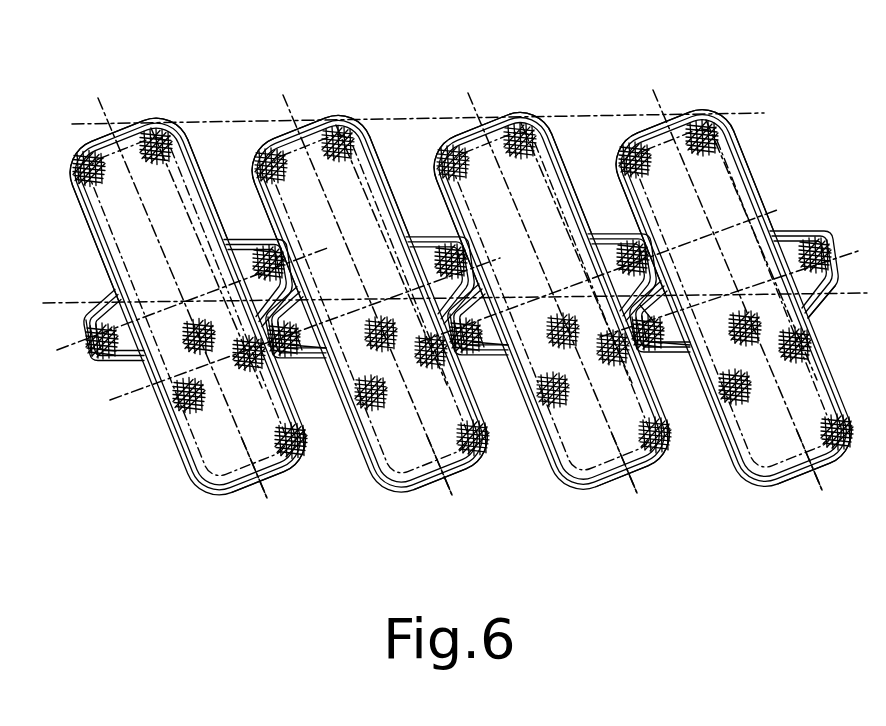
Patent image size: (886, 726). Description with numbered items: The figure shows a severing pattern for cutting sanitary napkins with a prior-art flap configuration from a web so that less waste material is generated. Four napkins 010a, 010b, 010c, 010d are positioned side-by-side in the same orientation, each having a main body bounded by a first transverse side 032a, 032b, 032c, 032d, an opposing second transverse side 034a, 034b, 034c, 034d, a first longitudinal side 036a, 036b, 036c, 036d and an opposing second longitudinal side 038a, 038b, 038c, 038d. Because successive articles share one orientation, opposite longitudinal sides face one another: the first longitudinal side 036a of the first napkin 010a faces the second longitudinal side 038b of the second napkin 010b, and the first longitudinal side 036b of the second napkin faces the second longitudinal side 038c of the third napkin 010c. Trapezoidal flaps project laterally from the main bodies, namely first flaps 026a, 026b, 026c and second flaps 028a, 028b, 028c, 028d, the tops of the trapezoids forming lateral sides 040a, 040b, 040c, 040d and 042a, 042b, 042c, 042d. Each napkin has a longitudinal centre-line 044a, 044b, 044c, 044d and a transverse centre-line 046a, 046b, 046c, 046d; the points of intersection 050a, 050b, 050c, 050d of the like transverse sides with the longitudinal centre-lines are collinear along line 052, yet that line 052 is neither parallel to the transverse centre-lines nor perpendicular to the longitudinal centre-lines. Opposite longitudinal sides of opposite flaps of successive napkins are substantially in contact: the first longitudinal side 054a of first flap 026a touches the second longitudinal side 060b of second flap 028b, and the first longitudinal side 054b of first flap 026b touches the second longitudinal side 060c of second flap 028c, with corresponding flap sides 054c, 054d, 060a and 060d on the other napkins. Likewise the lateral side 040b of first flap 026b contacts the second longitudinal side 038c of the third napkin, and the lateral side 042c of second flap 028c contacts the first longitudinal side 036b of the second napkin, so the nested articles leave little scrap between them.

The first napkin 010a is at (670, 68).
The second napkin 010b is at (487, 70).
The third napkin 010c is at (298, 70).
The fourth napkin 010d is at (113, 70).
The first flap 026a is at (672, 340).
The first flap 026b is at (491, 343).
The first flap 026c is at (307, 343).
The second flap 028a is at (830, 231).
The second flap 028b is at (624, 234).
The second flap 028c is at (439, 236).
The second flap 028d is at (254, 238).
The first transverse side 032a is at (712, 112).
The first transverse side 032b is at (530, 115).
The first transverse side 032c is at (343, 117).
The first transverse side 032d is at (158, 118).
The second transverse side 034a is at (795, 485).
The second transverse side 034b is at (613, 488).
The second transverse side 034c is at (432, 491).
The second transverse side 034d is at (250, 494).
The first longitudinal side 036a is at (620, 182).
The first longitudinal side 036b is at (439, 185).
The first longitudinal side 036c is at (257, 188).
The first longitudinal side 036d is at (74, 190).
The second longitudinal side 038a is at (757, 183).
The second longitudinal side 038b is at (575, 186).
The second longitudinal side 038c is at (393, 189).
The second longitudinal side 038d is at (211, 191).
The lateral side of first flap 040a is at (668, 340).
The lateral side of first flap 040b is at (487, 343).
The lateral side of first flap 040c is at (323, 333).
The lateral side of first flap 040d is at (93, 358).
The lateral side of second flap 042a is at (826, 236).
The lateral side of second flap 042b is at (650, 248).
The lateral side of second flap 042c is at (470, 250).
The lateral side of second flap 042d is at (288, 252).
The longitudinal centre-line 044a is at (825, 471).
The longitudinal centre-line 044b is at (640, 474).
The longitudinal centre-line 044c is at (456, 475).
The longitudinal centre-line 044d is at (273, 477).
The transverse centre-line 046a is at (741, 295).
The transverse centre-line 046b is at (619, 277).
The transverse centre-line 046c is at (289, 335).
The transverse centre-line 046d is at (177, 307).
The point of intersection 050a is at (668, 119).
The point of intersection 050b is at (487, 119).
The point of intersection 050c is at (298, 120).
The point of intersection 050d is at (113, 122).
The line 052 is at (424, 118).
The first longitudinal side of first flap 054a is at (640, 232).
The first longitudinal side of first flap 054b is at (458, 235).
The first longitudinal side of first flap 054c is at (276, 238).
The first longitudinal side of first flap 054d is at (112, 292).
The second longitudinal side of second flap 060a is at (830, 293).
The second longitudinal side of second flap 060b is at (648, 303).
The second longitudinal side of second flap 060c is at (487, 347).
The second longitudinal side of second flap 060d is at (313, 340).